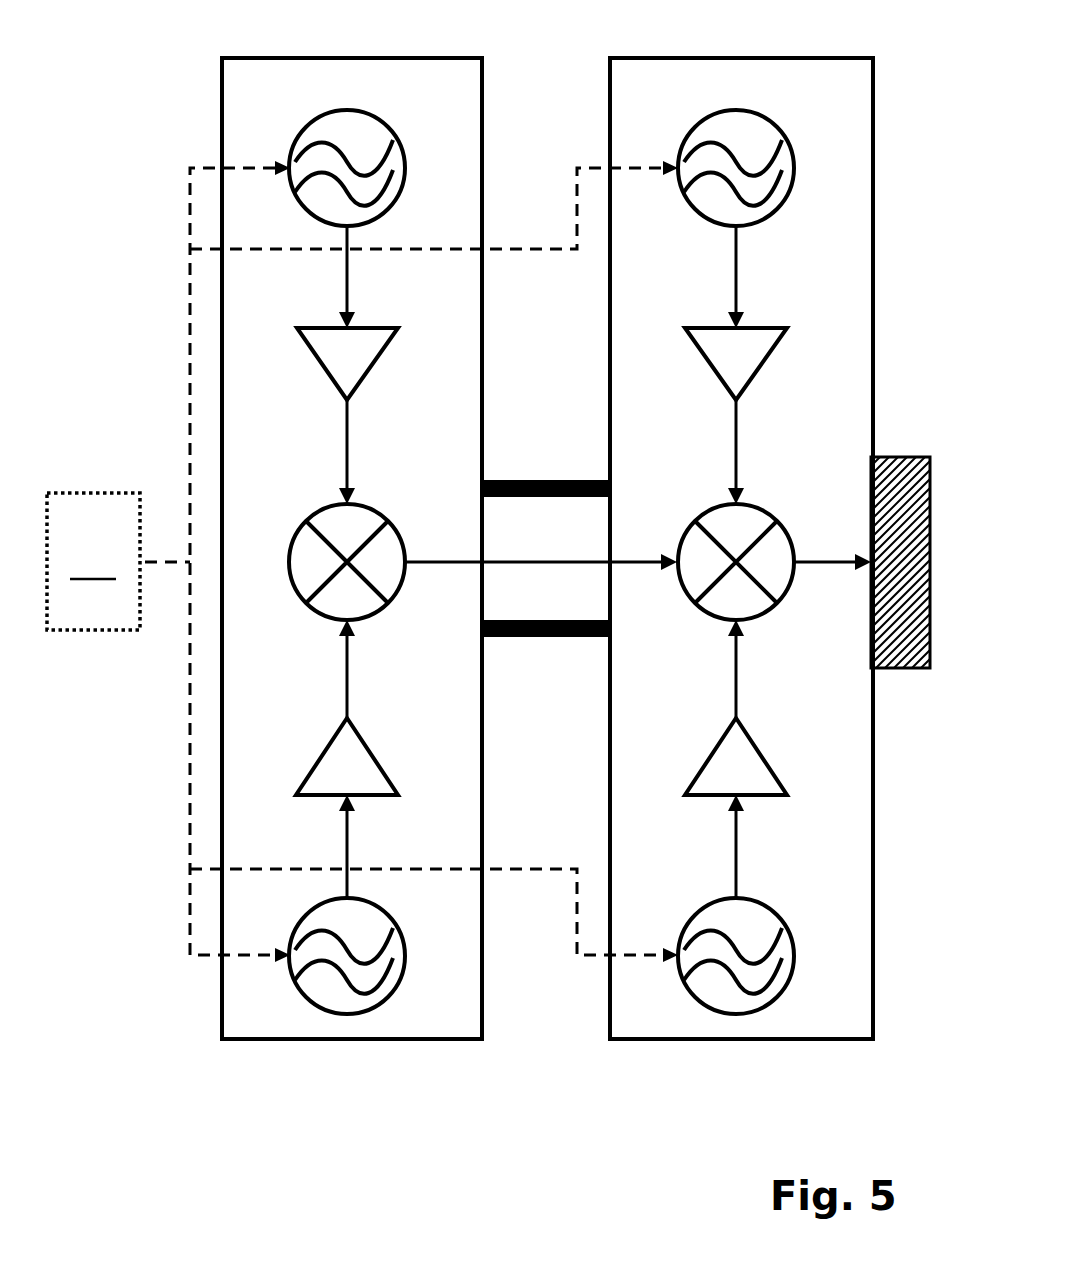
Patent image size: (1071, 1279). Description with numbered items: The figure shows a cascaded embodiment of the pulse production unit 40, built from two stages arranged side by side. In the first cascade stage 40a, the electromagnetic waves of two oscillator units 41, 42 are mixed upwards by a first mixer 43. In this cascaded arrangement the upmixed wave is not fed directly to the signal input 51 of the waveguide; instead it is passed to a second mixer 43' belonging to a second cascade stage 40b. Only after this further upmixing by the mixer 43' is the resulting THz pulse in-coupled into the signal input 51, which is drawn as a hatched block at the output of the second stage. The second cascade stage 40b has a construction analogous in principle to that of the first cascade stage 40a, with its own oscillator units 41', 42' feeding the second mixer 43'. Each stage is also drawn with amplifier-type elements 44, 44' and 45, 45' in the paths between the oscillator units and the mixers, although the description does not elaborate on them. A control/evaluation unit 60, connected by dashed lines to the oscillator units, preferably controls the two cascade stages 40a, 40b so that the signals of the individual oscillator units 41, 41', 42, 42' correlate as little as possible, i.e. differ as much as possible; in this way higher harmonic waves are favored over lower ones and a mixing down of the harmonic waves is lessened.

The pulse production unit 40 is at (898, 1033).
The first cascade stage 40a is at (222, 106).
The second cascade stage 40b is at (876, 125).
The oscillator unit 41 is at (380, 959).
The oscillator unit 41' is at (768, 926).
The oscillator unit 42 is at (370, 151).
The oscillator unit 42' is at (765, 207).
The first mixer 43 is at (322, 528).
The second mixer 43' is at (711, 528).
The amplifier of first unit 44 is at (372, 737).
The amplifier of second unit 44' is at (764, 737).
The attenuator/amplifier of first unit 45 is at (374, 385).
The attenuator/amplifier of second unit 45' is at (769, 381).
The signal input 51 is at (887, 457).
The control/evaluation unit 60 is at (97, 493).